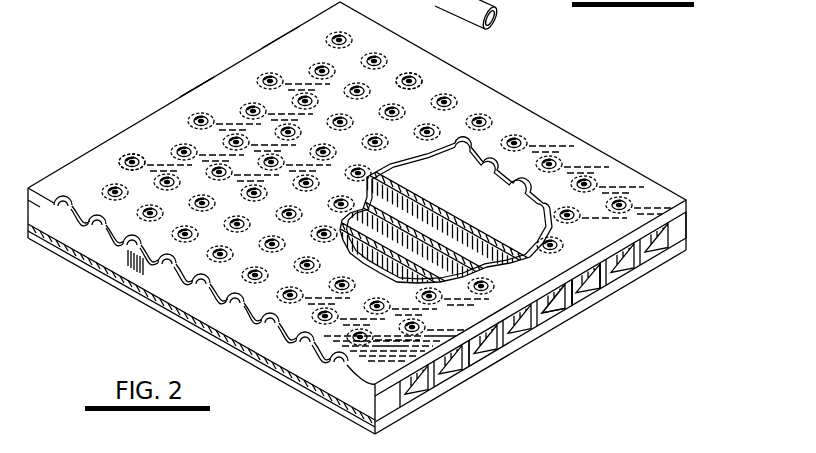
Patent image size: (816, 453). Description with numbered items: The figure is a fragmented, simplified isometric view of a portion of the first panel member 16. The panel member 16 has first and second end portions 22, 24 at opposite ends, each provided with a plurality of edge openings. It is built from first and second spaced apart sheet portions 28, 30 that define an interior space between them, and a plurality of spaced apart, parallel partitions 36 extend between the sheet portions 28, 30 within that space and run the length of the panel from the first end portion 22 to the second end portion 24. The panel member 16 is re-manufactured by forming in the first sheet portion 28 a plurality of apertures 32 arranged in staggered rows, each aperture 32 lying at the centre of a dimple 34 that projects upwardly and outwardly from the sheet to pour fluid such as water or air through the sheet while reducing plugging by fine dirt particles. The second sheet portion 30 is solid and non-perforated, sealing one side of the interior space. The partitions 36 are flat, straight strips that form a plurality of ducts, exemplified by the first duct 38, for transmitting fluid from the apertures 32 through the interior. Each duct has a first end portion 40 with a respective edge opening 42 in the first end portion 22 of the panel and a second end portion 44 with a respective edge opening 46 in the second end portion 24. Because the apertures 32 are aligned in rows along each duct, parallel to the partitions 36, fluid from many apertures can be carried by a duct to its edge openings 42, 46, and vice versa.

The first panel member 16 is at (576, 110).
The first end portion 22 is at (270, 26).
The second end portion 24 is at (550, 361).
The first sheet portion 28 is at (616, 173).
The second sheet portion 30 is at (412, 414).
The apertures 32 is at (133, 157).
The dimple 34 is at (124, 166).
The partitions 36 is at (690, 230).
The first duct 38 is at (549, 312).
The first end portion of duct 40 is at (196, 86).
The edge opening 42 is at (196, 86).
The second end portion of duct 44 is at (584, 293).
The edge opening 46 is at (584, 293).